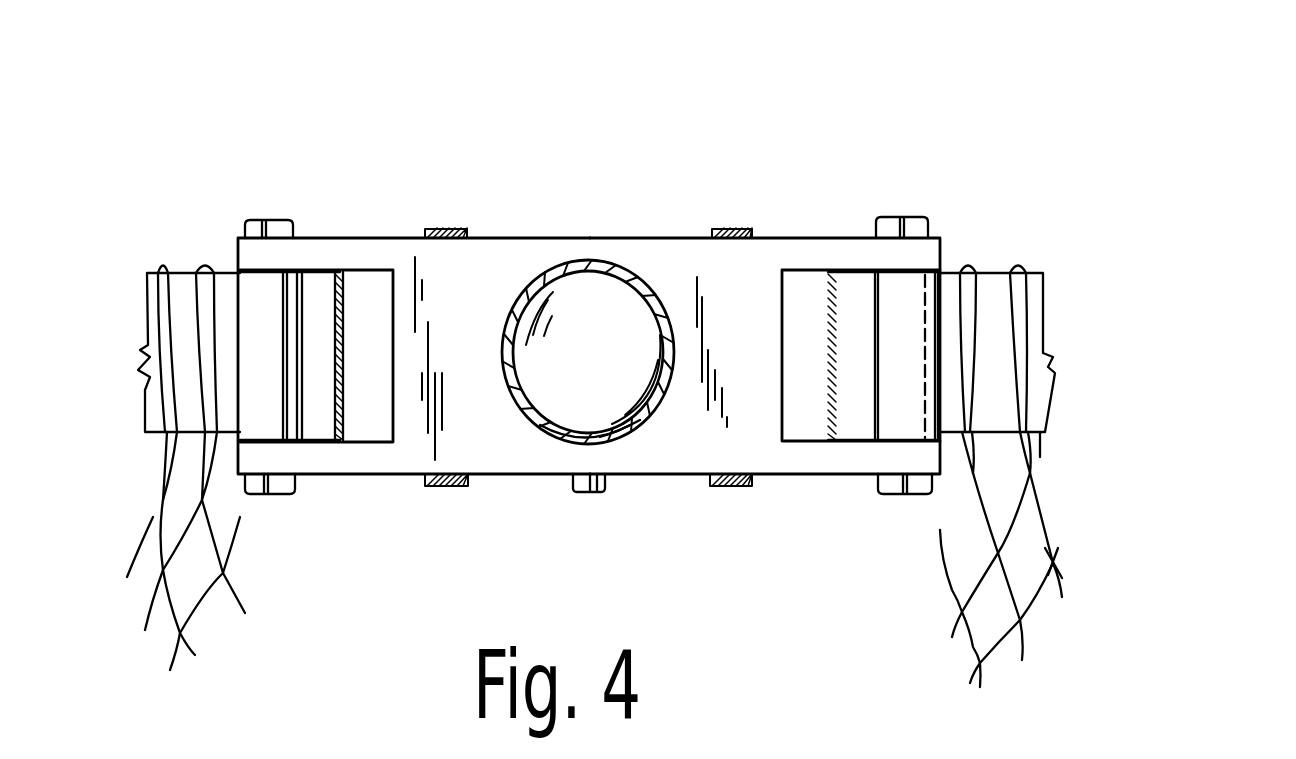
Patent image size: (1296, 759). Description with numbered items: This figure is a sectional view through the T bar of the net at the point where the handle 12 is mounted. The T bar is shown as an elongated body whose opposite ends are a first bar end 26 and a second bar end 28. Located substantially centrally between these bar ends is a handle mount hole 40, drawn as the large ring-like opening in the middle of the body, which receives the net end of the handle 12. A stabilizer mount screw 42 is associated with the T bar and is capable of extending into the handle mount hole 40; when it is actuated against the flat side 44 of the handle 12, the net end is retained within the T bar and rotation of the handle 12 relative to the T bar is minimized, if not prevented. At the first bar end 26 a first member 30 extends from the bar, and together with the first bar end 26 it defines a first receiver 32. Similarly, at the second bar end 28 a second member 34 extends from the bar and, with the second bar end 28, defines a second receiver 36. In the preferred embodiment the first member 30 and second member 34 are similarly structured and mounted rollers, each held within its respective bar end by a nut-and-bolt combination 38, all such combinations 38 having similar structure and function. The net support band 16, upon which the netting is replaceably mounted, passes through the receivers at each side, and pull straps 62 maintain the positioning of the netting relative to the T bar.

The handle 12 is at (587, 262).
The net support band 16 is at (1037, 307).
The first bar end 26 is at (323, 250).
The second bar end 28 is at (852, 237).
The first member 30 is at (255, 312).
The first receiver 32 is at (364, 418).
The second member 34 is at (925, 308).
The second receiver 36 is at (812, 425).
The nut-and-bolt combination 38 is at (283, 497).
The handle mount hole 40 is at (568, 442).
The stabilizer mount screw 42 is at (574, 492).
The flat side 44 is at (618, 448).
The pull strap 62 is at (448, 232).